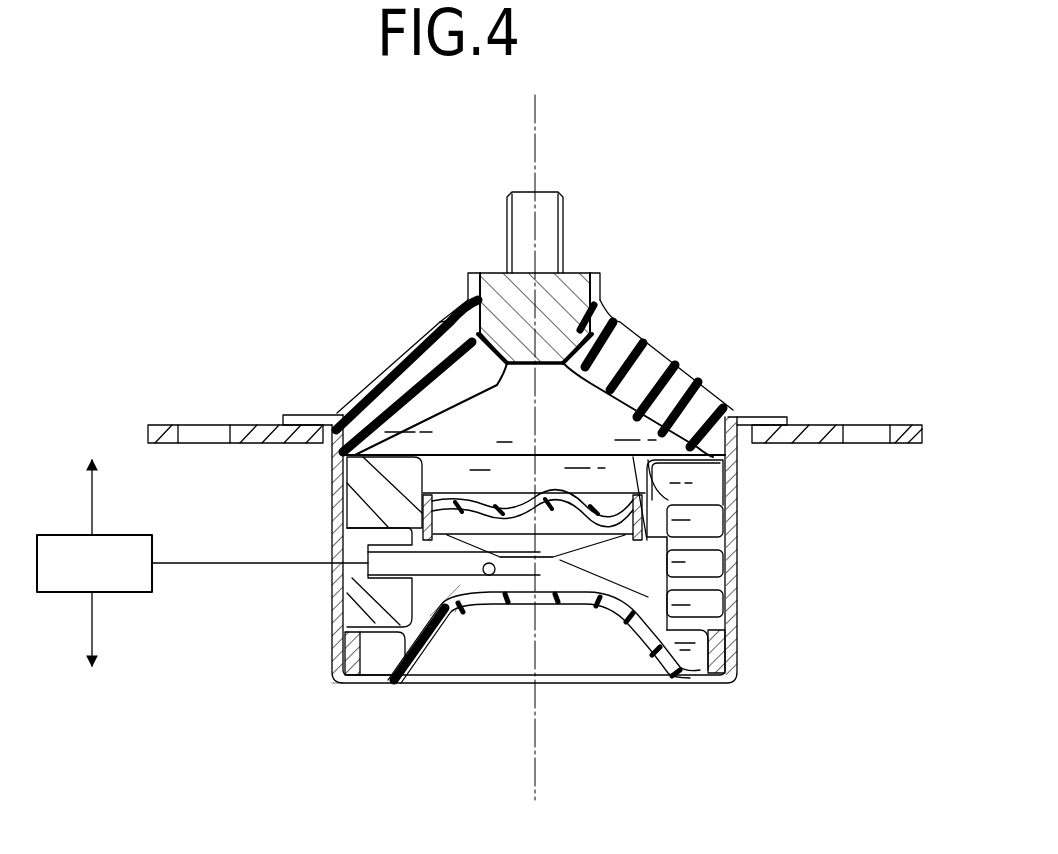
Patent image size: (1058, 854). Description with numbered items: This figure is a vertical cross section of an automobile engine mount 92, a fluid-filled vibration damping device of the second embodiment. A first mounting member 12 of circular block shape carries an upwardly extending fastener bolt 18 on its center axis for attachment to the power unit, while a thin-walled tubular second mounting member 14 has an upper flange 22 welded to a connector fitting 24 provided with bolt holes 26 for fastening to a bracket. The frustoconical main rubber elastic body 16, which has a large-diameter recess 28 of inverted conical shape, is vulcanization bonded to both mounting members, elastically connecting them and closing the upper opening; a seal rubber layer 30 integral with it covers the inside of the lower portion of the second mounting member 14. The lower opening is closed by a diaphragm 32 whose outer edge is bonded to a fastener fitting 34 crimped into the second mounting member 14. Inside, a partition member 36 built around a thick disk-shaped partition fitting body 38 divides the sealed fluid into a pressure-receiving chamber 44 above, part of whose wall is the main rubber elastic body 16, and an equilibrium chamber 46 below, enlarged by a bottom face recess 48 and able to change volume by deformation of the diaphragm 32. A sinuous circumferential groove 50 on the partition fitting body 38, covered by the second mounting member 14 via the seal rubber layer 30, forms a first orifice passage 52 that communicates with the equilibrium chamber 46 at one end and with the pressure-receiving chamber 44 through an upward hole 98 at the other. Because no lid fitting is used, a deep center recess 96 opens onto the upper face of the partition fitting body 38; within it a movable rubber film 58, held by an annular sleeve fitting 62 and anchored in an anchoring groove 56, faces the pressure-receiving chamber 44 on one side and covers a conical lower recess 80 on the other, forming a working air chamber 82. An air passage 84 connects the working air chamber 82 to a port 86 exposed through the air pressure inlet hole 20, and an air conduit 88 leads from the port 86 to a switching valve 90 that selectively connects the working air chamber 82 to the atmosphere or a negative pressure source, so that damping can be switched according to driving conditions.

The first mounting member 12 is at (570, 290).
The second mounting member 14 is at (343, 498).
The main rubber elastic body 16 is at (620, 340).
The fastener bolt 18 is at (542, 230).
The air pressure inlet hole 20 is at (347, 605).
The flange 22 is at (315, 420).
The connector fitting 24 is at (815, 440).
The bolt holes 26 is at (878, 440).
The large-diameter recess 28 is at (480, 383).
The seal rubber layer 30 is at (338, 503).
The diaphragm 32 is at (467, 597).
The fastener fitting 34 is at (335, 658).
The partition member 36 is at (406, 443).
The partition fitting body 38 is at (613, 560).
The pressure-receiving chamber 44 is at (534, 416).
The equilibrium chamber 46 is at (375, 652).
The bottom face recess 48 is at (430, 622).
The circumferential groove 50 is at (695, 598).
The first orifice passage 52 is at (685, 567).
The anchoring groove 56 is at (647, 543).
The movable rubber film 58 is at (563, 520).
The sleeve fitting 62 is at (700, 513).
The lower recess 80 is at (592, 530).
The working air chamber 82 is at (535, 545).
The air passage 84 is at (488, 577).
The port 86 is at (350, 640).
The air conduit 88 is at (222, 566).
The switching valve 90 is at (125, 582).
The engine mount 92 is at (716, 240).
The center recess 96 is at (640, 455).
The hole 98 is at (670, 497).